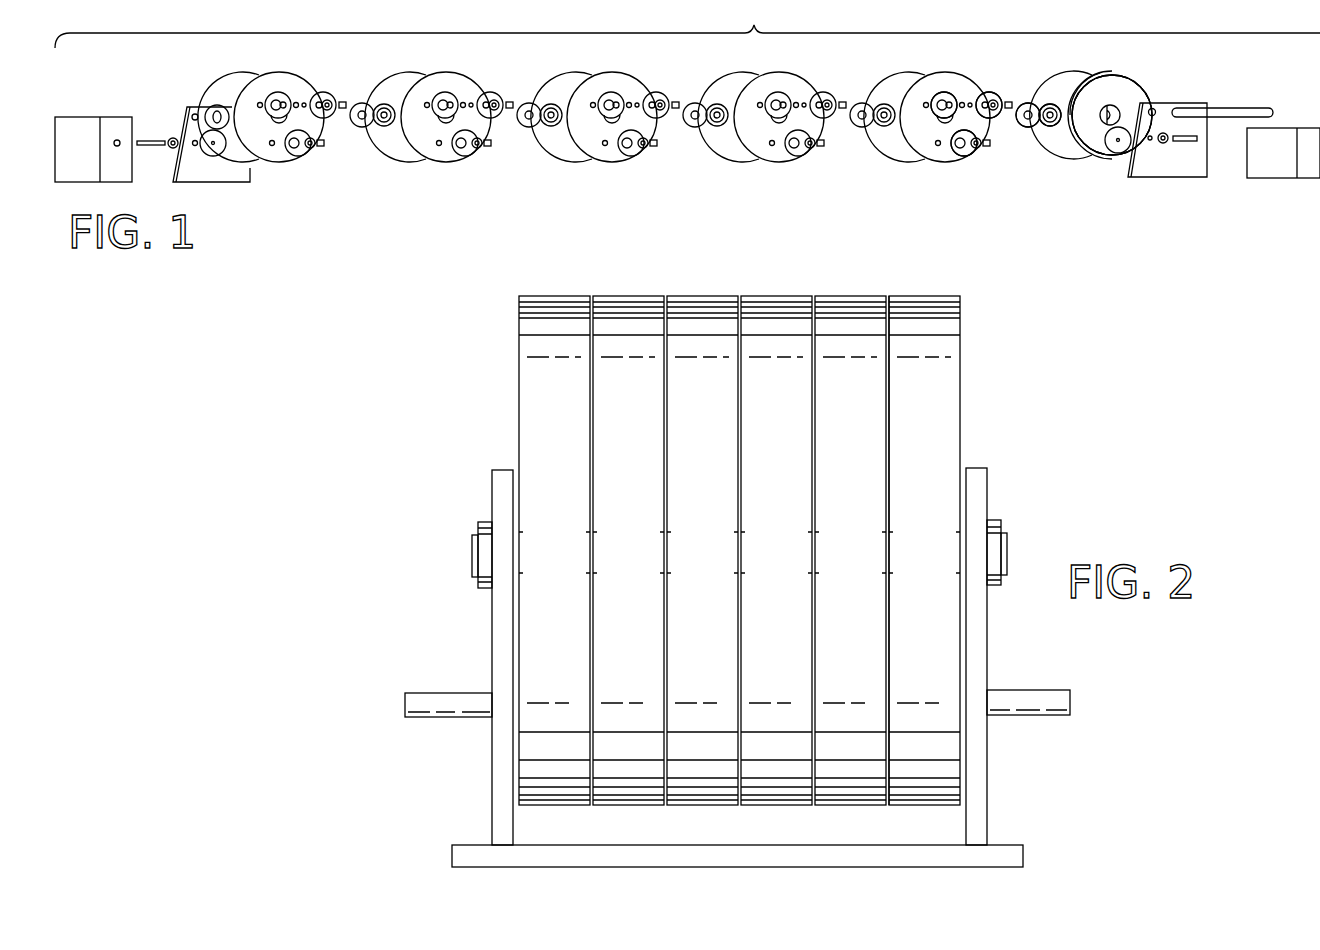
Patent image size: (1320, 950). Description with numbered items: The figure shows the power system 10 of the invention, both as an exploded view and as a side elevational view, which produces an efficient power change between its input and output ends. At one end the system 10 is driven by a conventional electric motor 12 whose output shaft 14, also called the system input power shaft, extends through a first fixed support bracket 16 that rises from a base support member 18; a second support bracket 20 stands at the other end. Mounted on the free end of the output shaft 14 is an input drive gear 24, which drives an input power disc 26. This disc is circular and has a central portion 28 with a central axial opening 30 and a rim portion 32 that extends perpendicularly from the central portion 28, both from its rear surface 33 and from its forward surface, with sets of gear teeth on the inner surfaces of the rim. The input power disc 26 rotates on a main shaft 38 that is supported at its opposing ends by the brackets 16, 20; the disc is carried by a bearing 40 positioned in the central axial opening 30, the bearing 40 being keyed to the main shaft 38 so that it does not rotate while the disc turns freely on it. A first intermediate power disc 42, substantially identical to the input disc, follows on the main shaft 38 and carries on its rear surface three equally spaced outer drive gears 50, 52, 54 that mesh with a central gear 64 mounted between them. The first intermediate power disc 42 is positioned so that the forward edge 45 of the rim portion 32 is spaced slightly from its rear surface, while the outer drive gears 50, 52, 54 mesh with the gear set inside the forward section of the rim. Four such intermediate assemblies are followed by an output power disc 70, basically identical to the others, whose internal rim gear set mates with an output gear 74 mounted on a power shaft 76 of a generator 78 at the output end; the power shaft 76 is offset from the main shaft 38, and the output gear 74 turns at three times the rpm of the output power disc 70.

In FIG. 1, the power system 10 is at (503, 130).
In FIG. 1, the electric motor 12 is at (1285, 178).
In FIG. 1, the output shaft 14 is at (1195, 141).
In FIG. 2, the output shaft 14 is at (1030, 716).
In FIG. 1, the first fixed support bracket 16 is at (1172, 158).
In FIG. 2, the first fixed support bracket 16 is at (975, 646).
In FIG. 2, the base support member 18 is at (860, 868).
In FIG. 1, the second support bracket 20 is at (250, 168).
In FIG. 2, the second support bracket 20 is at (492, 602).
In FIG. 1, the input drive gear 24 is at (1118, 154).
In FIG. 1, the input power disc 26 is at (1125, 67).
In FIG. 2, the input power disc 26 is at (955, 375).
In FIG. 1, the central portion 28 is at (1090, 132).
In FIG. 1, the central axial opening 30 is at (1122, 117).
In FIG. 1, the rim portion 32 is at (1097, 72).
In FIG. 1, the rear surface 33 is at (1128, 93).
In FIG. 1, the main shaft 38 is at (1246, 107).
In FIG. 2, the main shaft 38 is at (1000, 545).
In FIG. 1, the bearing 40 is at (1050, 103).
In FIG. 1, the first intermediate power disc 42 is at (934, 72).
In FIG. 2, the first intermediate power disc 42 is at (845, 335).
In FIG. 2, the forward edge 45 is at (890, 297).
In FIG. 1, the outer drive gear 50 is at (950, 93).
In FIG. 1, the outer drive gear 52 is at (993, 116).
In FIG. 1, the outer drive gear 54 is at (966, 157).
In FIG. 1, the central gear 64 is at (1038, 128).
In FIG. 1, the output power disc 70 is at (284, 88).
In FIG. 2, the output power disc 70 is at (558, 294).
In FIG. 1, the output gear 74 is at (218, 156).
In FIG. 1, the power shaft 76 is at (139, 171).
In FIG. 2, the power shaft 76 is at (455, 718).
In FIG. 1, the generator 78 is at (115, 117).